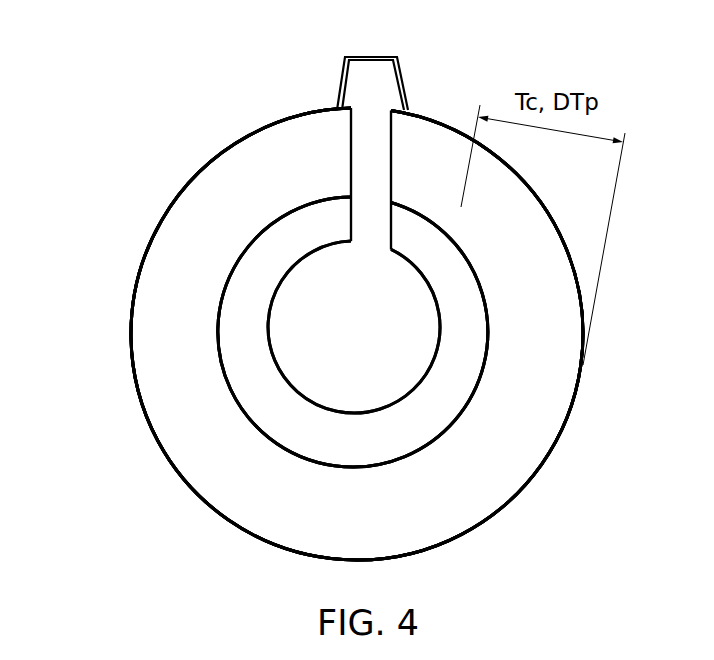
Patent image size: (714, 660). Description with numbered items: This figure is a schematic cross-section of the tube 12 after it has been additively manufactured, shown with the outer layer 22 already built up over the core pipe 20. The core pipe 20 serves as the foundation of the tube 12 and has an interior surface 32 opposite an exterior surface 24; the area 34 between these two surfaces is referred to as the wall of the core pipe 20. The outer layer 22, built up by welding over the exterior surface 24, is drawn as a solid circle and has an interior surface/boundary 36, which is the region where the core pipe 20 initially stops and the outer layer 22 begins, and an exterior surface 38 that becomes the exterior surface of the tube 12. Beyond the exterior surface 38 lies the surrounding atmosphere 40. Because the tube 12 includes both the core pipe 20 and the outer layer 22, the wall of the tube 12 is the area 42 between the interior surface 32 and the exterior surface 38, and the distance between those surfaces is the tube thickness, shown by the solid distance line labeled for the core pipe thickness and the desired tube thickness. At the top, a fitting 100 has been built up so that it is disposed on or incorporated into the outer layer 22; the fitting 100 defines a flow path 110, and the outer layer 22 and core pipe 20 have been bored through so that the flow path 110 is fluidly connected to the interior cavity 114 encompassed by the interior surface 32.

The atmosphere 40 is at (46, 195).
The tube 12 is at (151, 142).
The exterior surface 38 is at (287, 118).
The area 34 is at (300, 227).
The interior surface/boundary 36 is at (243, 242).
The core pipe 20 is at (198, 308).
The outer layer 22 is at (118, 406).
The exterior surface 24 is at (222, 356).
The interior surface 32 is at (272, 347).
The interior cavity 114 is at (376, 330).
The fitting 100 is at (341, 78).
The flow path 110 is at (377, 93).
The area 42 is at (435, 397).